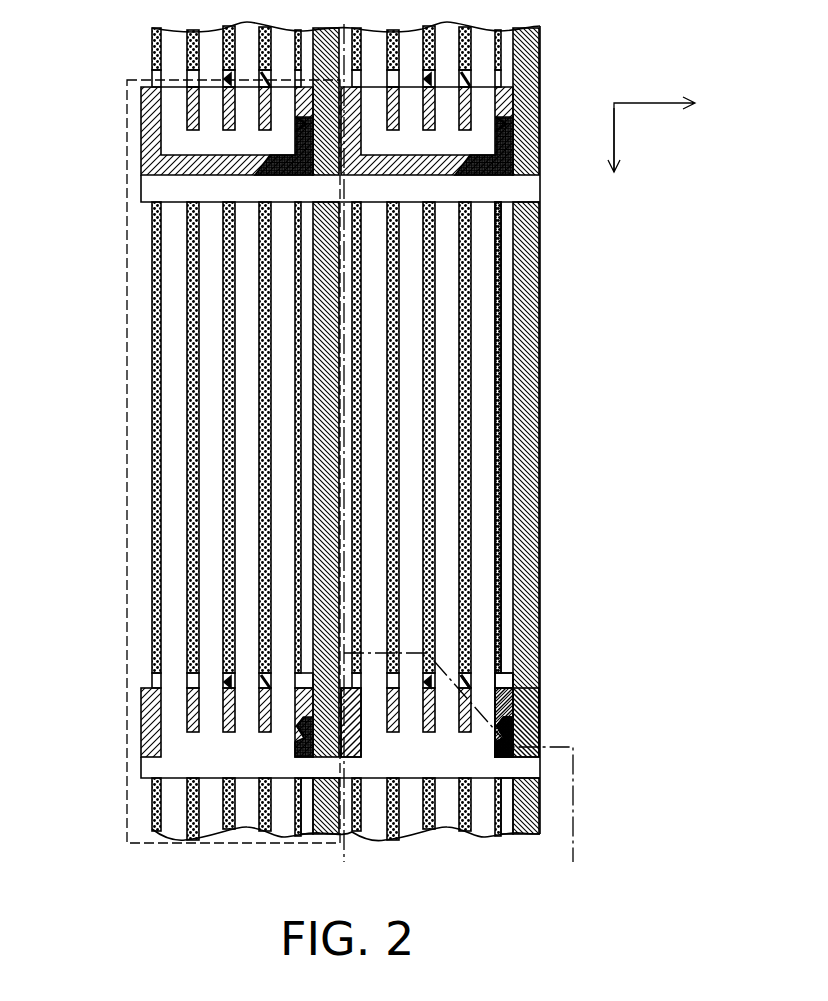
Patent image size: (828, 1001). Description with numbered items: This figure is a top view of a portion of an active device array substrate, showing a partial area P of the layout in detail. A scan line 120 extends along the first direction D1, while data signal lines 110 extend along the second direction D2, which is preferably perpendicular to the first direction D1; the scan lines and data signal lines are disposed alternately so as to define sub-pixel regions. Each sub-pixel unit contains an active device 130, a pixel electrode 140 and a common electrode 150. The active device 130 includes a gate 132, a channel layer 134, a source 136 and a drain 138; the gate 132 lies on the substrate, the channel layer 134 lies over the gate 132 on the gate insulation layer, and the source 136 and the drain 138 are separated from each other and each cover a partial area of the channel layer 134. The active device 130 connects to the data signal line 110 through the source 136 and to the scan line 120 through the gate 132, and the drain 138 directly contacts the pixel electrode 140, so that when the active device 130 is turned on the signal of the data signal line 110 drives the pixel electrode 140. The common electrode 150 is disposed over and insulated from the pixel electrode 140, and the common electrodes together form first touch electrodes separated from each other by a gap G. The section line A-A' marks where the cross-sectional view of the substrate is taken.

The data signal line 110 is at (522, 418).
The scan line 120 is at (156, 122).
The active device 130 is at (643, 595).
The gate 132 is at (520, 738).
The channel layer 134 is at (500, 703).
The source 136 is at (525, 727).
The drain 138 is at (462, 683).
The pixel electrode 140 is at (496, 497).
The common electrode 150 is at (480, 446).
The gap G is at (155, 188).
The partial area P is at (127, 287).
The first direction D1 is at (672, 128).
The second direction D2 is at (614, 159).
The section line A-A' A is at (344, 461).
The section line A- A' is at (464, 776).